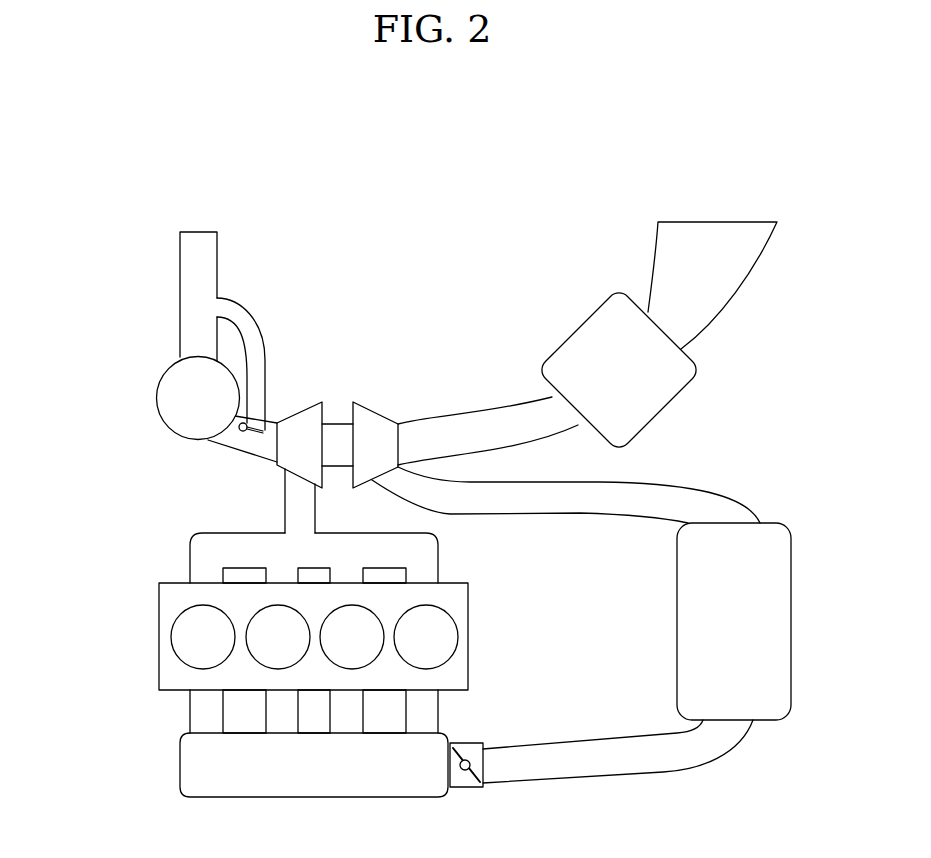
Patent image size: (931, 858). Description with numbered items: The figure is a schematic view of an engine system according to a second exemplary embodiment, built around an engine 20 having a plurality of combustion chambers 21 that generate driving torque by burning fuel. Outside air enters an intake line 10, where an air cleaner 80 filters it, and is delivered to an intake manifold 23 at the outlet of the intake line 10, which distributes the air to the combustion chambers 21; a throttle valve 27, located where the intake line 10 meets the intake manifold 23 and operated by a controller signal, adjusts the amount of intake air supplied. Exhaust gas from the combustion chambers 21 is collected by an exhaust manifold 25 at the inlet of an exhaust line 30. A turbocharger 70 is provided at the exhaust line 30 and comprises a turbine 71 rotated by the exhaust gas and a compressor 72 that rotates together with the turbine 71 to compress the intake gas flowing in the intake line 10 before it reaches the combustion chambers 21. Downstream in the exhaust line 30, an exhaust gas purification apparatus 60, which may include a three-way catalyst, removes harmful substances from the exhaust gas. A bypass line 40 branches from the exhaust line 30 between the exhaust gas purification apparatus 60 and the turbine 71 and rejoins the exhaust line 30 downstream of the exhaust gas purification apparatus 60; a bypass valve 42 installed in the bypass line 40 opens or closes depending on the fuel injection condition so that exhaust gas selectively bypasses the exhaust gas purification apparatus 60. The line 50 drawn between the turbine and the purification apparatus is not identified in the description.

The intake line 10 is at (683, 490).
The engine 20 is at (267, 690).
The combustion chambers 21 is at (168, 635).
The intake manifold 23 is at (313, 797).
The exhaust manifold 25 is at (188, 545).
The throttle valve 27 is at (465, 789).
The exhaust line 30 is at (180, 293).
The bypass line 40 is at (253, 321).
The bypass valve 42 is at (239, 433).
The exhaust line 50 is at (463, 417).
The exhaust gas purification apparatus 60 is at (157, 398).
The turbocharger 70 is at (343, 411).
The turbine 71 is at (310, 411).
The compressor 72 is at (379, 410).
The air cleaner 80 is at (704, 370).